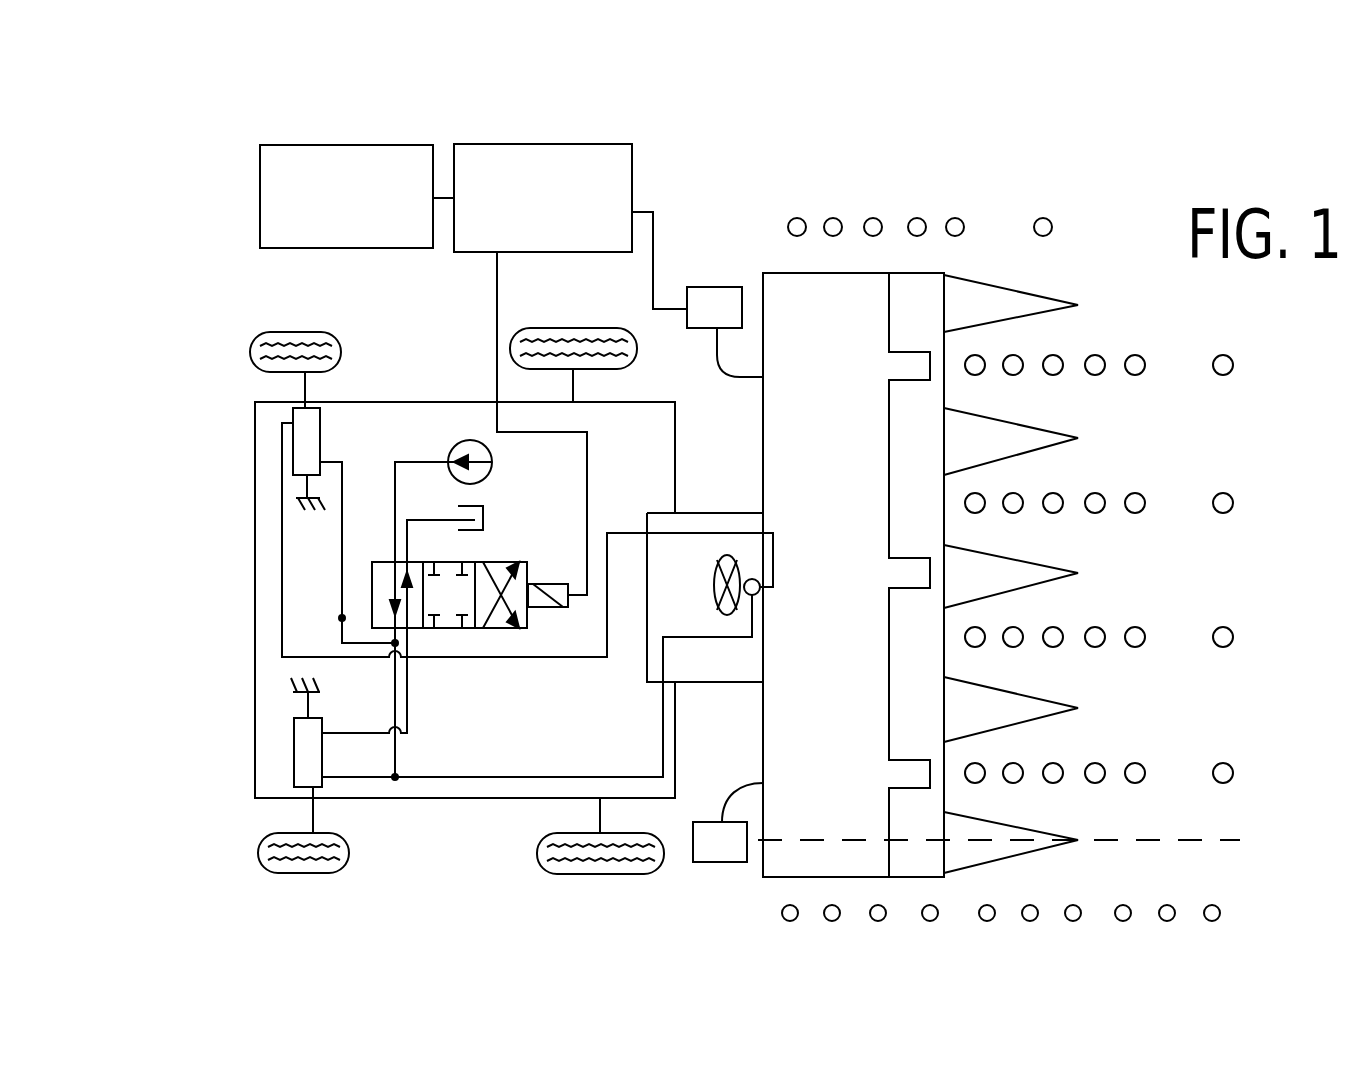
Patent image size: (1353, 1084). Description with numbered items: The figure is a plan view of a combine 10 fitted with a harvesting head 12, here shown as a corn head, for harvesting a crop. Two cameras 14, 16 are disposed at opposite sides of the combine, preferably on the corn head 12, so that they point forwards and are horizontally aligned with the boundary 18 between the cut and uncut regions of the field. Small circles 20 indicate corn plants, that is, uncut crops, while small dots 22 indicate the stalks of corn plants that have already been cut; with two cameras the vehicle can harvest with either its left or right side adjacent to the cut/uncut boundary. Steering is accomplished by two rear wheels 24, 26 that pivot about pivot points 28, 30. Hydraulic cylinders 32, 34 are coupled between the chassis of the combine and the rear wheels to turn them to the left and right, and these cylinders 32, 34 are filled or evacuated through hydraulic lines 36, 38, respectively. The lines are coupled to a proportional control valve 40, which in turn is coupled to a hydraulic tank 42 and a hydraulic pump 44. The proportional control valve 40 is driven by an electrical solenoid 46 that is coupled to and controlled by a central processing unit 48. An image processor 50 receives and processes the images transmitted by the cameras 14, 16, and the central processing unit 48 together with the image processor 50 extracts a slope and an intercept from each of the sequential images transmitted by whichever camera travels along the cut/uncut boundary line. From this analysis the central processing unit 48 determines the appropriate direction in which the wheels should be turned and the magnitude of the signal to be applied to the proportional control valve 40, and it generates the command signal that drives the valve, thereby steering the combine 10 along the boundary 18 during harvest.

The combine 10 is at (486, 812).
The harvesting head 12 is at (862, 615).
The camera 14 is at (723, 287).
The camera 16 is at (705, 822).
The boundary 18 is at (820, 838).
The circles 20 is at (958, 220).
The dots 22 is at (1167, 904).
The rear wheel 24 is at (349, 848).
The rear wheel 26 is at (289, 332).
The pivot point 28 is at (313, 826).
The pivot point 30 is at (300, 399).
The hydraulic cylinder 32 is at (300, 742).
The hydraulic cylinder 34 is at (300, 453).
The hydraulic line 36 is at (407, 718).
The hydraulic line 38 is at (342, 618).
The proportional control valve 40 is at (505, 670).
The hydraulic tank 42 is at (483, 518).
The hydraulic pump 44 is at (460, 447).
The electrical solenoid 46 is at (552, 607).
The central processing unit 48 is at (632, 186).
The image processor 50 is at (260, 190).